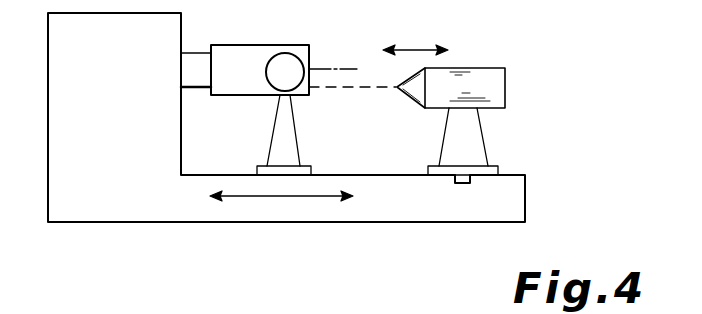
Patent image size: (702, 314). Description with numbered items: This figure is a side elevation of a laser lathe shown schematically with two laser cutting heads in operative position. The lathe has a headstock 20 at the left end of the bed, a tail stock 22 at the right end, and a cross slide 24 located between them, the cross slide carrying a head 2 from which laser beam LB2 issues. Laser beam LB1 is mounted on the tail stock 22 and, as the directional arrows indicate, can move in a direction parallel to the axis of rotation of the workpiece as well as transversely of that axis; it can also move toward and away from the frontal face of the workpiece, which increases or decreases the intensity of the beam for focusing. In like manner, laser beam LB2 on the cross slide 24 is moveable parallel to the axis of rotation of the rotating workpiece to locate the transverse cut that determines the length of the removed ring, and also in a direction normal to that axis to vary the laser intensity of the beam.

The headstock 20 is at (97, 76).
The measuring head 2 is at (255, 56).
The laser beam LB2 is at (266, 90).
The cross slide 24 is at (292, 134).
The laser beam LB1 is at (477, 68).
The tail stock 22 is at (473, 136).